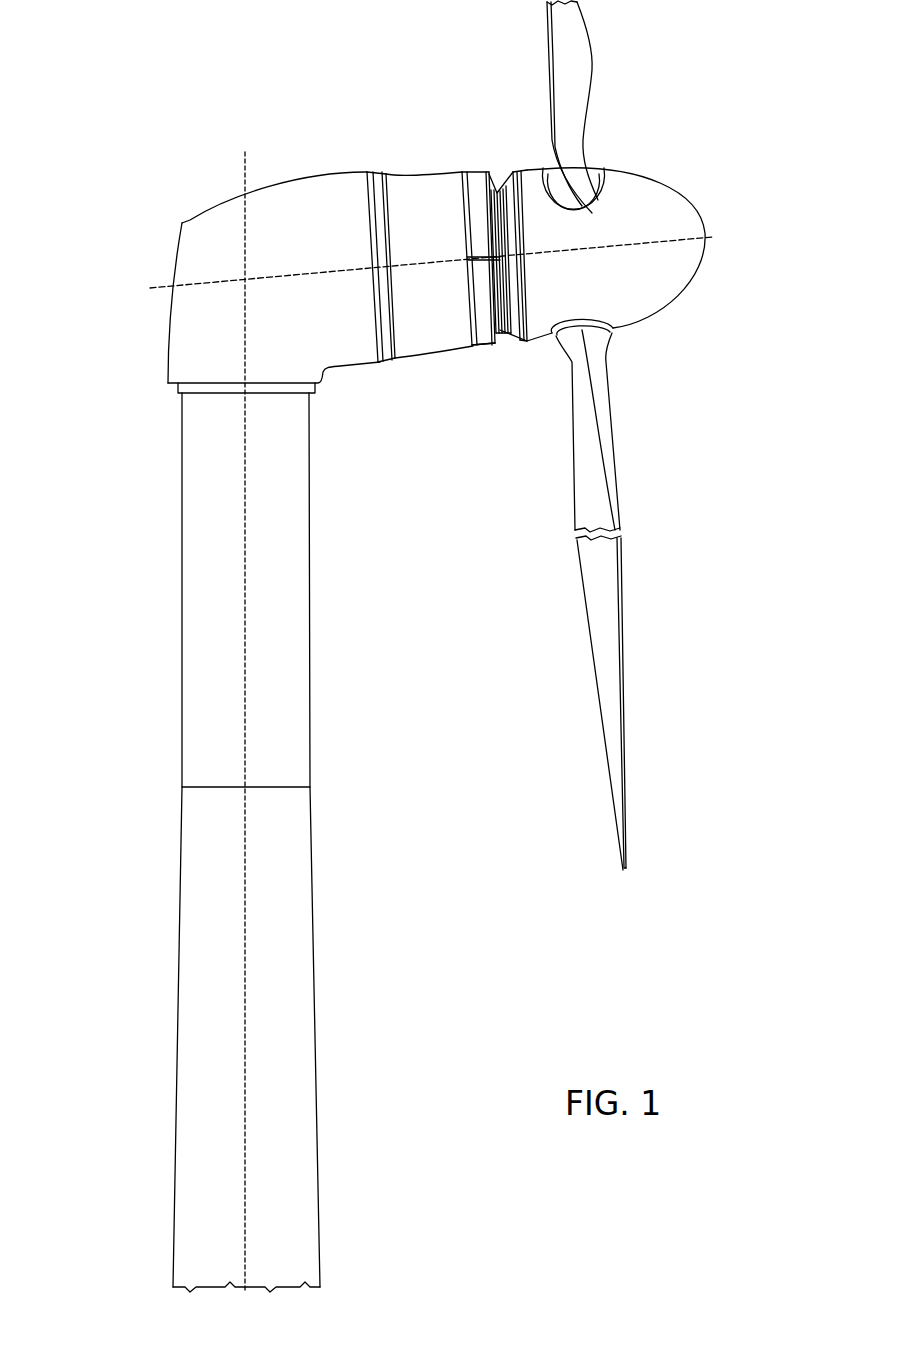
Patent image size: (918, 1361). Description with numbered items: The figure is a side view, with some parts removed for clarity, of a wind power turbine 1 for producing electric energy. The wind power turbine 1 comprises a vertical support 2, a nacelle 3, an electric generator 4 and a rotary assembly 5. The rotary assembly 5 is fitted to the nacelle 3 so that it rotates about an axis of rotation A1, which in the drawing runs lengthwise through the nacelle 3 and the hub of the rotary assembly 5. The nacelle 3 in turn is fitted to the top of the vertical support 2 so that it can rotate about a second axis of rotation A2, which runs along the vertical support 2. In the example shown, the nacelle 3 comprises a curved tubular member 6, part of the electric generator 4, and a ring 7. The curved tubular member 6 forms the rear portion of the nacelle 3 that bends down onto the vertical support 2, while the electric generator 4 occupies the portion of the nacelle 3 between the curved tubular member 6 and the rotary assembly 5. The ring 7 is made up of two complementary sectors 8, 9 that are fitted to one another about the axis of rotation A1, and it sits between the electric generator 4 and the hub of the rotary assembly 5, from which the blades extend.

The wind power turbine 1 is at (143, 836).
The vertical support 2 is at (193, 694).
The nacelle 3 is at (383, 120).
The electric generator 4 is at (456, 362).
The rotary assembly 5 is at (636, 395).
The curved tubular member 6 is at (294, 213).
The ring 7 is at (481, 386).
The complementary sector 8 is at (493, 345).
The complementary sector 9 is at (478, 175).
The axis of rotation A1 is at (714, 238).
The axis of rotation A2 is at (245, 479).